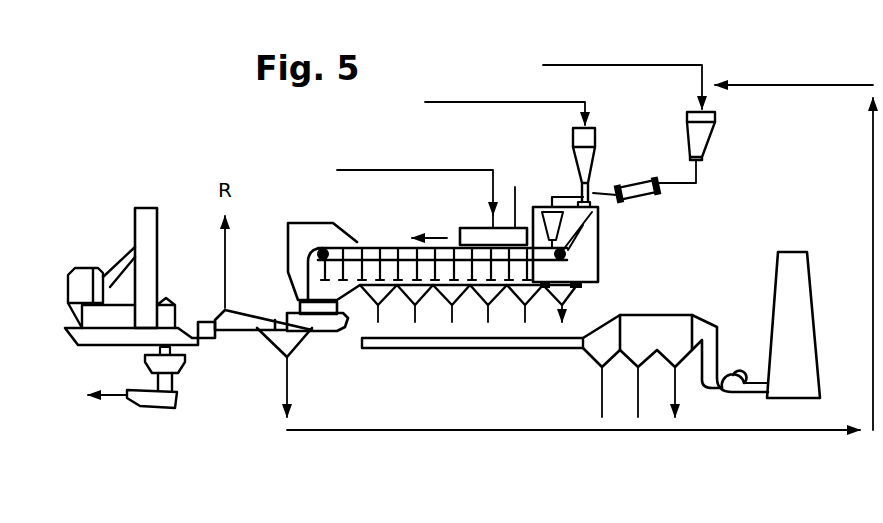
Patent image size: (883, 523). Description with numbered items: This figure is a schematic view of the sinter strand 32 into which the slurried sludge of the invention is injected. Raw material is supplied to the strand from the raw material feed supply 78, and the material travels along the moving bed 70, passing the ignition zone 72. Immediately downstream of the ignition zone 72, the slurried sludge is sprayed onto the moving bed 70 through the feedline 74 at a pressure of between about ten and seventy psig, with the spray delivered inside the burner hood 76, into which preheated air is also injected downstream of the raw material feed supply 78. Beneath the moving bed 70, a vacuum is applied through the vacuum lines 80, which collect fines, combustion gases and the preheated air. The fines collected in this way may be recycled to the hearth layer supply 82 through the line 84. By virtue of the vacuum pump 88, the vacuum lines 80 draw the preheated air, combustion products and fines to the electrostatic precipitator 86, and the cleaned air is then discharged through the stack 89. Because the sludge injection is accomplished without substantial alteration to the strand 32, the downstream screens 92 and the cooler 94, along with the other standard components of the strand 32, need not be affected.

The sinter strand 32 is at (284, 193).
The moving bed 70 is at (383, 240).
The ignition zone 72 is at (515, 187).
The feedline 74 is at (475, 168).
The burner hood 76 is at (463, 225).
The raw material feed supply 78 is at (597, 187).
The vacuum lines 80 is at (560, 317).
The hearth layer supply 82 is at (708, 145).
The line 84 is at (872, 175).
The electrostatic precipitator 86 is at (657, 318).
The vacuum pump 88 is at (745, 365).
The stack 89 is at (810, 283).
The screens 92 is at (262, 293).
The cooler 94 is at (160, 287).